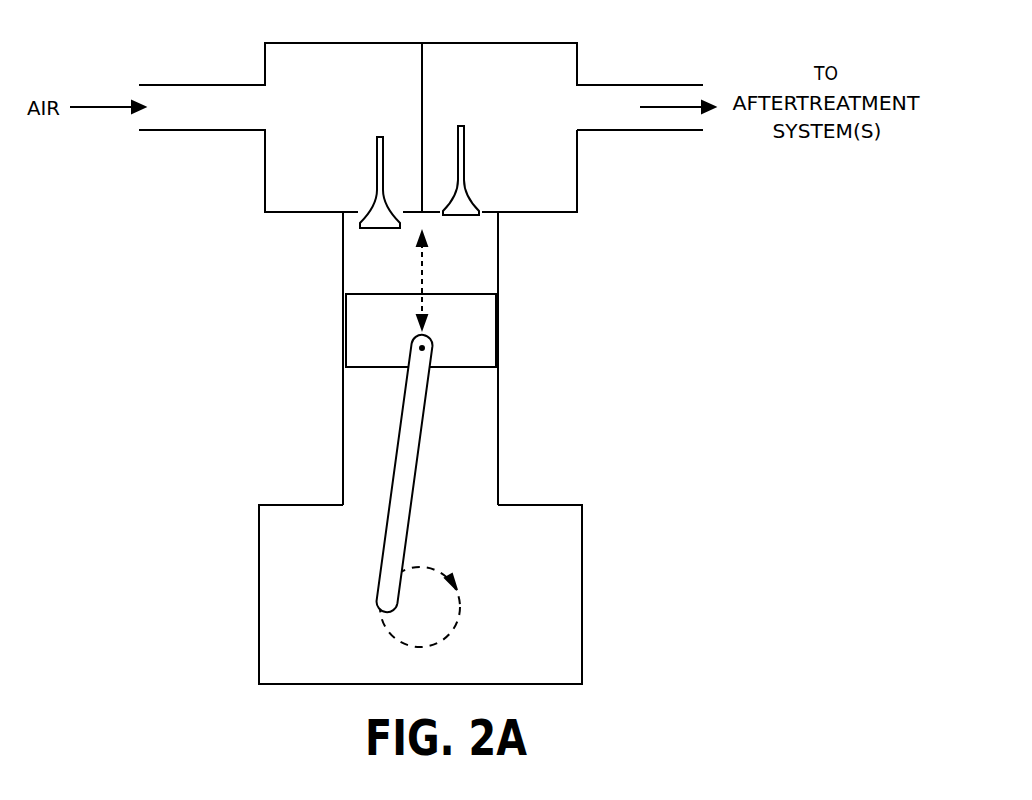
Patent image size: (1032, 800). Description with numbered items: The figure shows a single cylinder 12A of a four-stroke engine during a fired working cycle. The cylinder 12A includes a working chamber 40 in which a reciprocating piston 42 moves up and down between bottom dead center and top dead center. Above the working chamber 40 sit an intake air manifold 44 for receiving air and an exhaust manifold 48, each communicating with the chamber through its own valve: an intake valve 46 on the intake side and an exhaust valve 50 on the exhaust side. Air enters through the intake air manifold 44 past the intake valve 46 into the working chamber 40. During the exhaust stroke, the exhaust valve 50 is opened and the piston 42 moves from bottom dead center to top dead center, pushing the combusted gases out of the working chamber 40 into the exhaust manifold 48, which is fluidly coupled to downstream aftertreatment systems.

The cylinder 12A is at (177, 528).
The working chamber 40 is at (473, 262).
The reciprocating piston 42 is at (473, 333).
The intake air manifold 44 is at (332, 60).
The intake valve 46 is at (377, 172).
The exhaust manifold 48 is at (516, 90).
The exhaust valve 50 is at (466, 172).